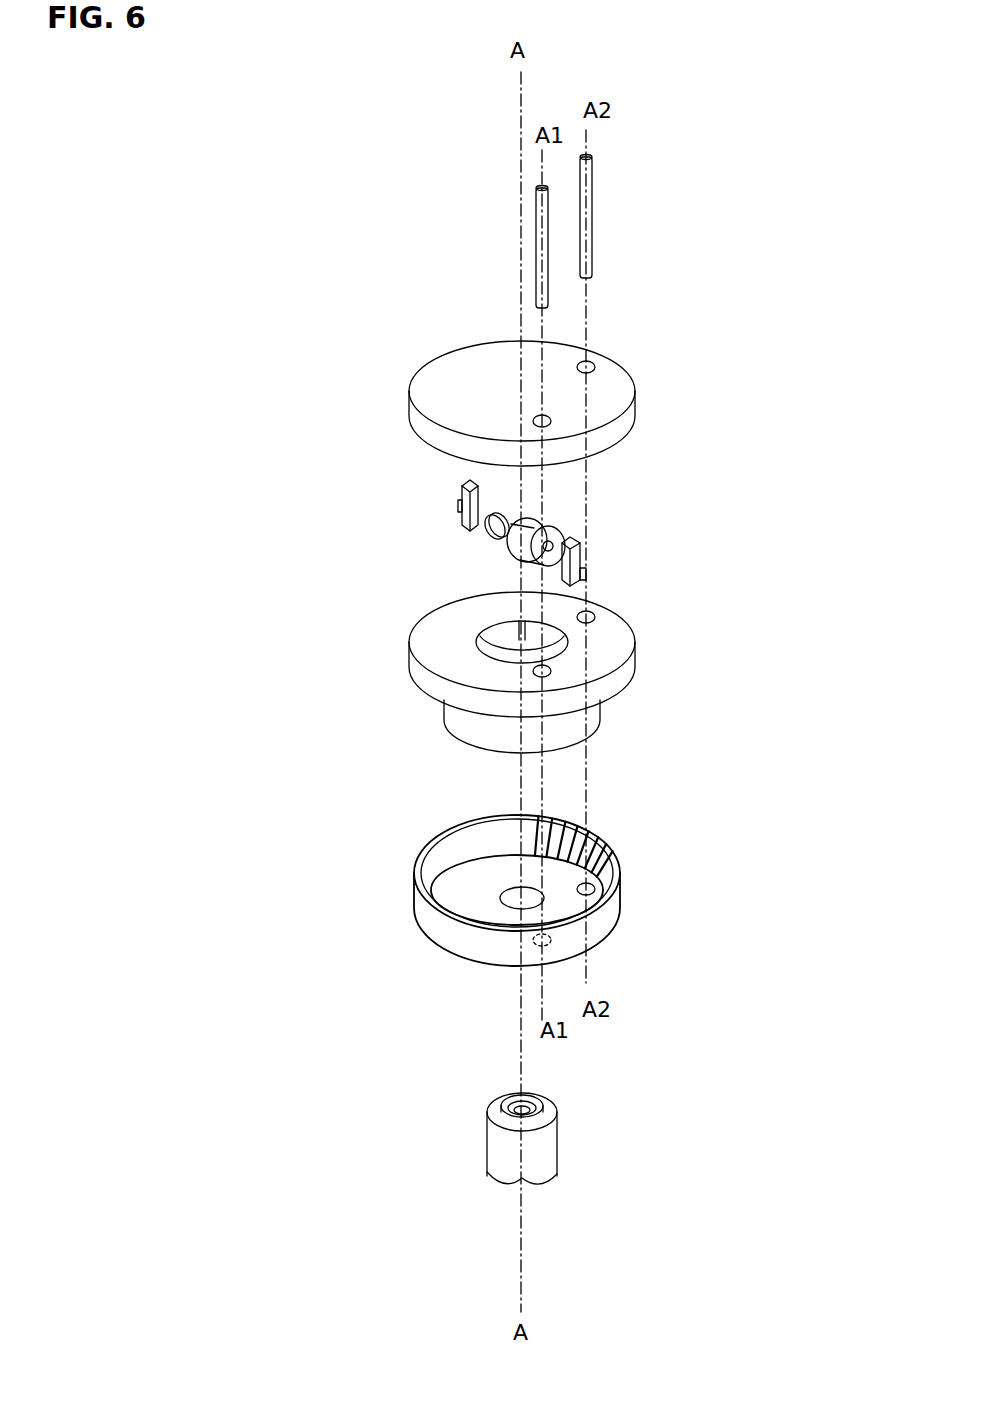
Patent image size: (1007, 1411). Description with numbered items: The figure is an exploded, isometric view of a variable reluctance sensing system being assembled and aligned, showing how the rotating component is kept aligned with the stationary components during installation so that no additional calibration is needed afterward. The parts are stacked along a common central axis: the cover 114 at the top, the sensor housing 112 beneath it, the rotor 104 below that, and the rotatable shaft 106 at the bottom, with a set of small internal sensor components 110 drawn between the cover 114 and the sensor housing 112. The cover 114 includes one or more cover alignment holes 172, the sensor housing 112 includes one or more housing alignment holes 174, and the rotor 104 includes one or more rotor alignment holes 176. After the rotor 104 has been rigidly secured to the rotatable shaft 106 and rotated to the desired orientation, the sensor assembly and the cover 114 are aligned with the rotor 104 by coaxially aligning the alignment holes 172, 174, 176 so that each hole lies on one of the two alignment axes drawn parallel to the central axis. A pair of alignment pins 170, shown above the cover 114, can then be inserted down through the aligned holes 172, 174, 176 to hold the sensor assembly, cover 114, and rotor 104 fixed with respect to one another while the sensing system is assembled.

The rotor 104 is at (445, 935).
The rotatable shaft 106 is at (497, 1138).
The spacer assembly 110 is at (612, 511).
The sensor housing 112 is at (457, 723).
The cover 114 is at (417, 425).
The alignment pins 170 is at (607, 245).
The cover alignment holes 172 is at (551, 419).
The housing alignment holes 174 is at (551, 669).
The rotor alignment holes 176 is at (550, 938).